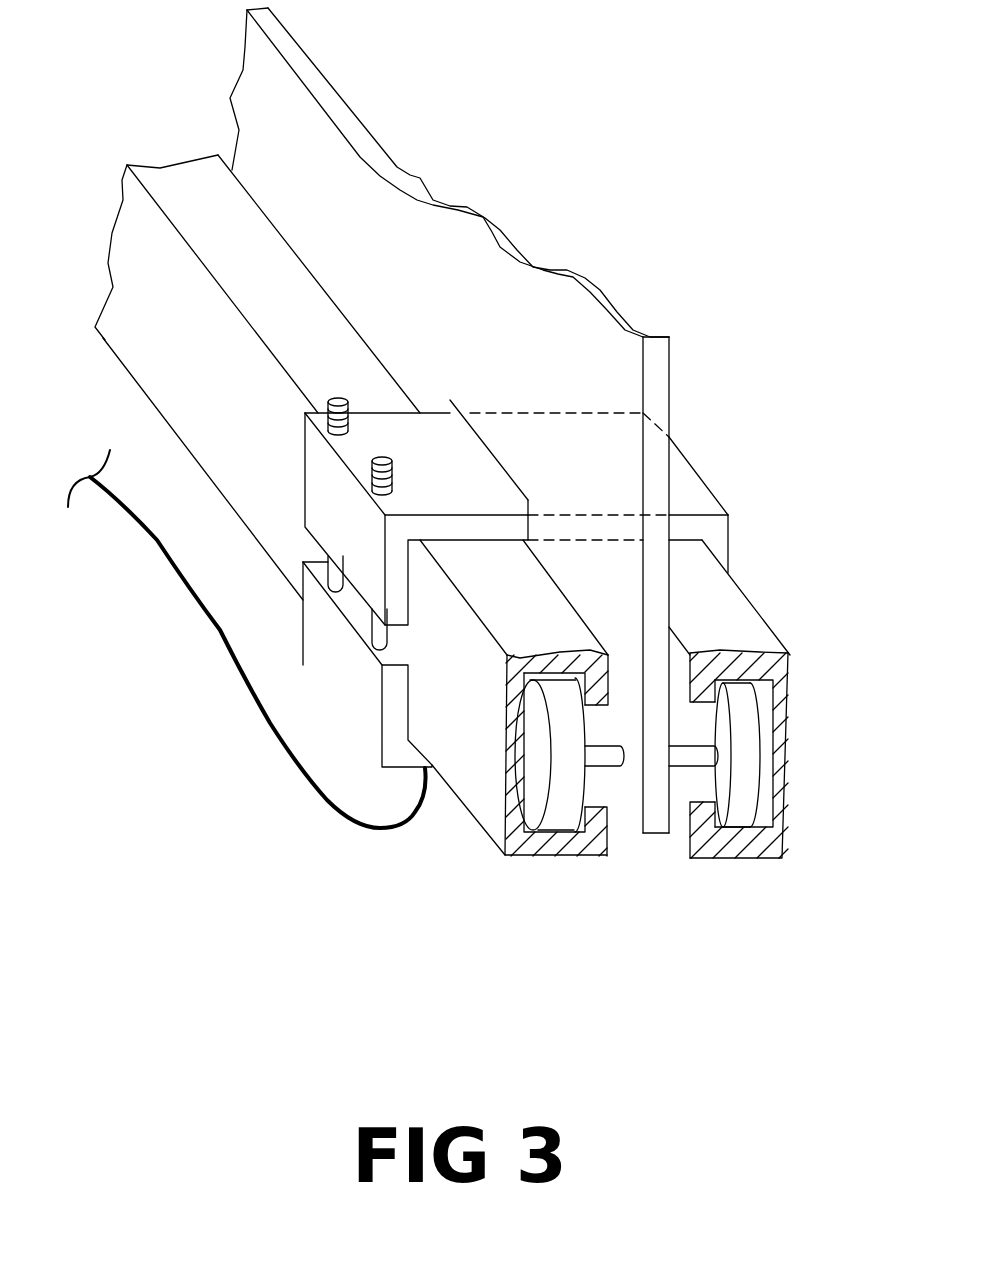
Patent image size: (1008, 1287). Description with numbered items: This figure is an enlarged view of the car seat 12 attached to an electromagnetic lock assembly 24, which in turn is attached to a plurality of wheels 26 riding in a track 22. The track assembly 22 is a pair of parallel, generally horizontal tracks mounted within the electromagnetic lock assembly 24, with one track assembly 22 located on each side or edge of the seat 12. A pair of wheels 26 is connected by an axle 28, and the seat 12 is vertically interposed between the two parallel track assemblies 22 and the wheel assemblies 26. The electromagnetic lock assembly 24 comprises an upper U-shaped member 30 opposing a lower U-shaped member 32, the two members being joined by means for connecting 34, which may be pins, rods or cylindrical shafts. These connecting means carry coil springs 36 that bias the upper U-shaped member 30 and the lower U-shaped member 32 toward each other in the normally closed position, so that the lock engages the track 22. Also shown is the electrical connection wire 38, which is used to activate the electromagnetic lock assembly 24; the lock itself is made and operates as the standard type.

The car seat 12 is at (557, 322).
The track 22 is at (720, 593).
The electromagnetic lock assembly 24 is at (685, 493).
The wheels 26 is at (745, 773).
The axle 28 is at (625, 750).
The upper U-shaped member 30 is at (333, 517).
The lower U-shaped member 32 is at (315, 627).
The means for connecting 34 is at (370, 638).
The coil springs 36 is at (390, 478).
The electrical connection wire 38 is at (262, 725).